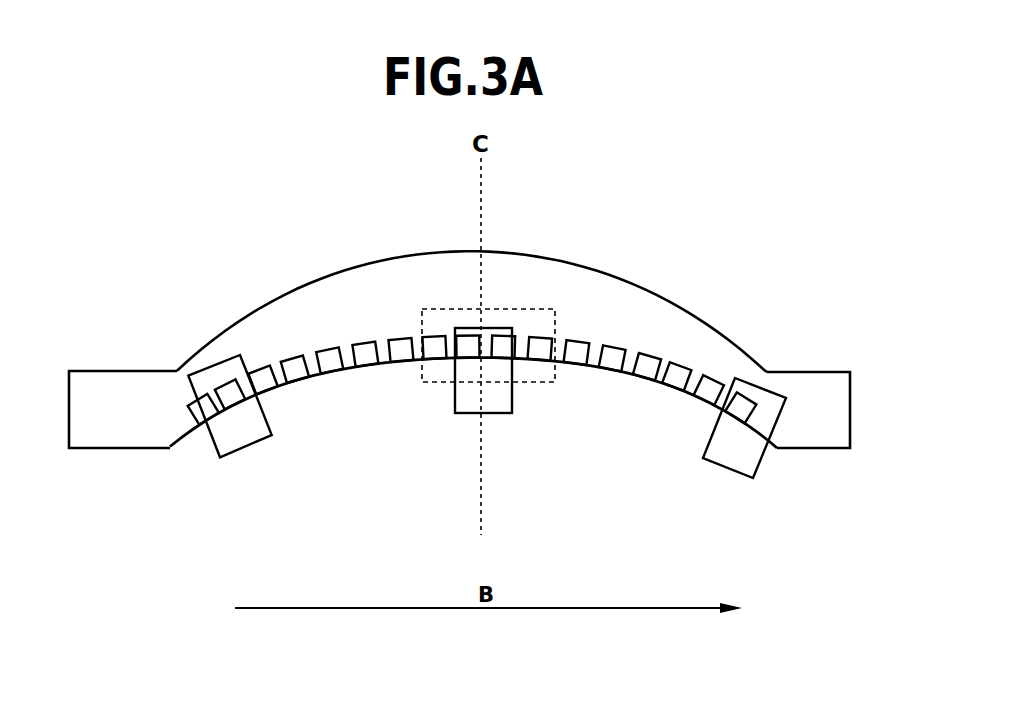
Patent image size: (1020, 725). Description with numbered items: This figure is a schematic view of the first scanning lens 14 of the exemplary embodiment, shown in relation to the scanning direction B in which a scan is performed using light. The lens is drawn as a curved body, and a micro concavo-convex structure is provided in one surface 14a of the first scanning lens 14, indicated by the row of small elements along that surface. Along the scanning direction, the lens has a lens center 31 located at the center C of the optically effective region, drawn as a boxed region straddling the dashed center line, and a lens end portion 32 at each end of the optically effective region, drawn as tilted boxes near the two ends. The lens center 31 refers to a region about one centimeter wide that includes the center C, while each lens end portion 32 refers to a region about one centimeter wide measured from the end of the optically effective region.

The first scanning lens 14 is at (675, 328).
The one surface 14a is at (287, 390).
The lens center 31 is at (470, 403).
The lens end portion 32 is at (240, 438).